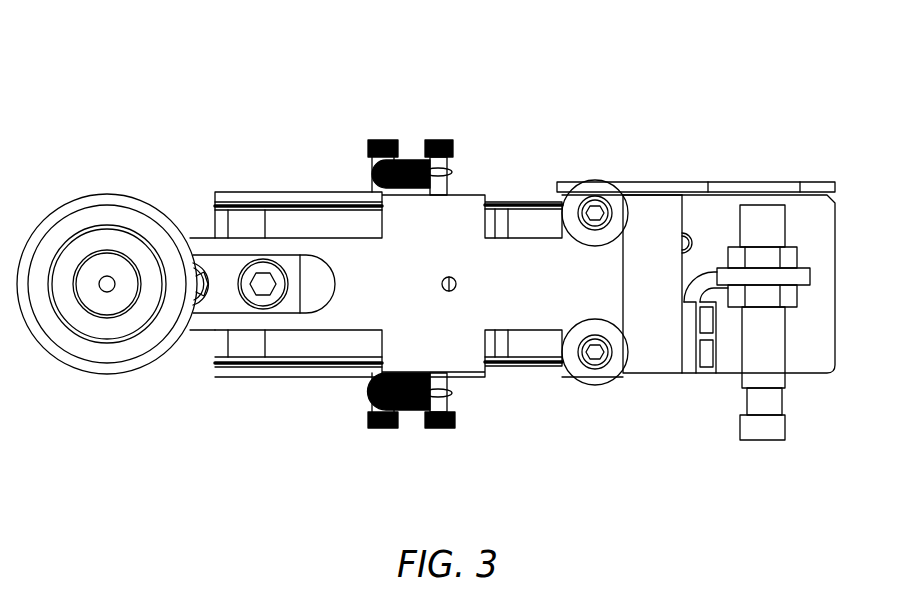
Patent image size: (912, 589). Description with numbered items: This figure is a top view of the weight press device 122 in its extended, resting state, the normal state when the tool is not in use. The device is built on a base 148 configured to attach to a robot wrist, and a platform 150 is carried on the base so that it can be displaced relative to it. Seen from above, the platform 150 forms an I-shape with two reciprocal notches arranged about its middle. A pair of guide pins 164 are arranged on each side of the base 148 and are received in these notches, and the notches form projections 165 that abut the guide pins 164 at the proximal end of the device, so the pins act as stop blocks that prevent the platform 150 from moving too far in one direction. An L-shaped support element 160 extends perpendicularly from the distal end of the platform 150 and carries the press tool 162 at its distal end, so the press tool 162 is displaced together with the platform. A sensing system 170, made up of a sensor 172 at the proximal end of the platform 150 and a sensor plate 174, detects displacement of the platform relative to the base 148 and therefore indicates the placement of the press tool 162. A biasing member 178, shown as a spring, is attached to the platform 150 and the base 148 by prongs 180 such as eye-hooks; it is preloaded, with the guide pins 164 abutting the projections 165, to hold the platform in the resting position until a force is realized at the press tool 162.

The weight press device 122 is at (733, 70).
The base 148 is at (728, 355).
The platform 150 is at (355, 283).
The support element 160 is at (202, 247).
The press tool 162 is at (95, 210).
The guide pins 164 is at (610, 338).
The projection 165 is at (655, 333).
The sensing system 170 is at (815, 208).
The sensor 172 is at (770, 226).
The sensor plate 174 is at (742, 182).
The biasing member 178 is at (418, 160).
The prongs 180 is at (372, 140).